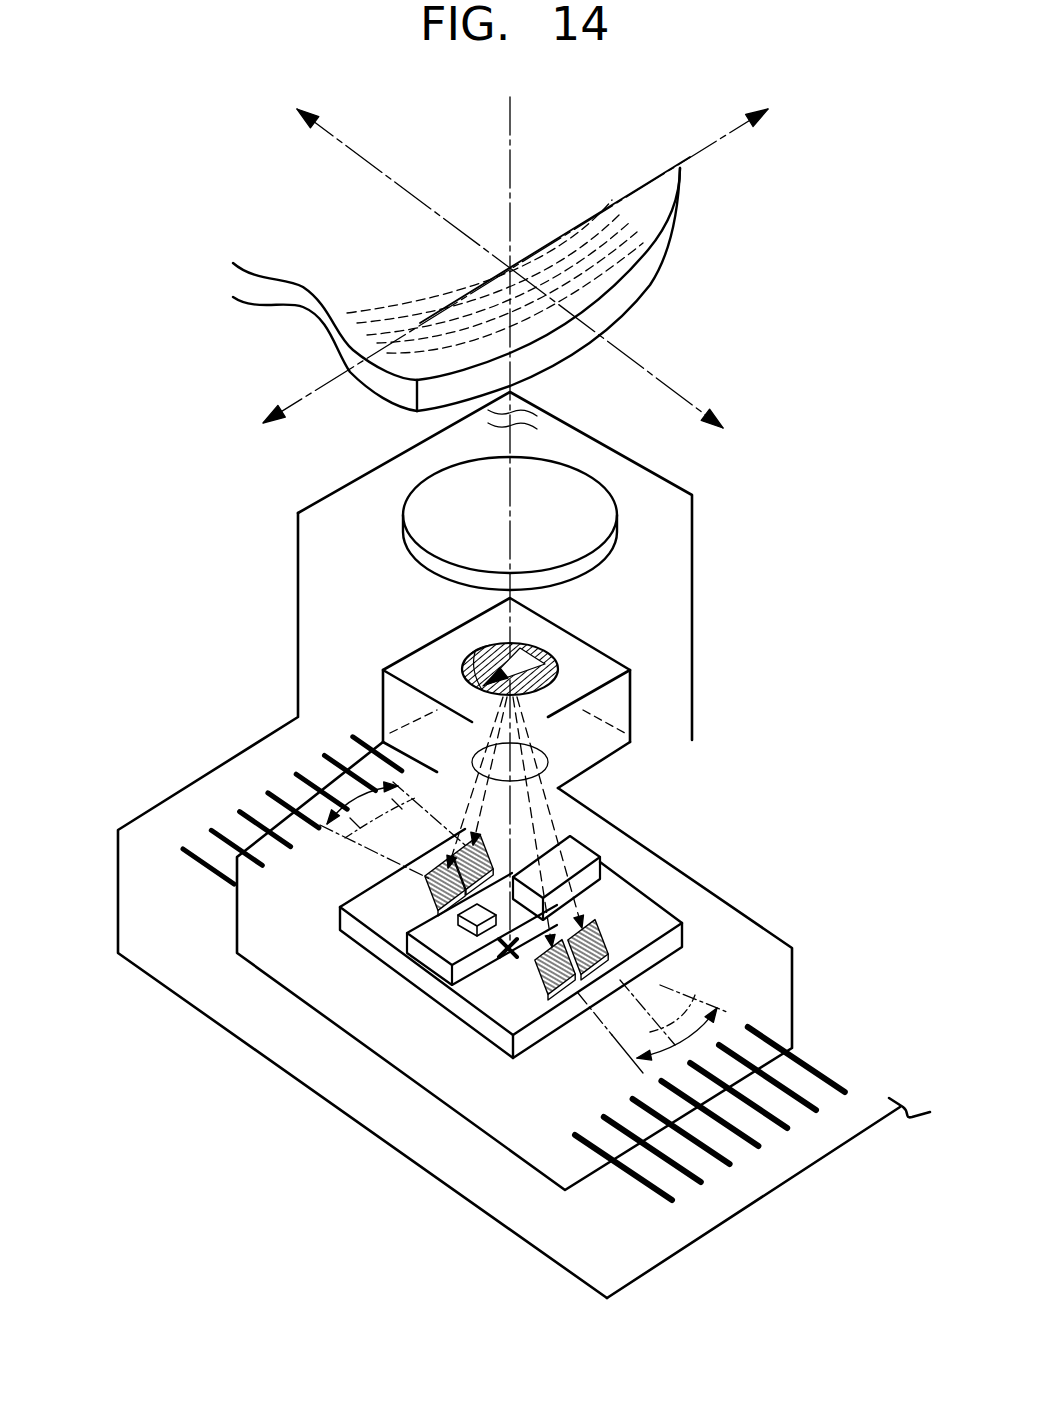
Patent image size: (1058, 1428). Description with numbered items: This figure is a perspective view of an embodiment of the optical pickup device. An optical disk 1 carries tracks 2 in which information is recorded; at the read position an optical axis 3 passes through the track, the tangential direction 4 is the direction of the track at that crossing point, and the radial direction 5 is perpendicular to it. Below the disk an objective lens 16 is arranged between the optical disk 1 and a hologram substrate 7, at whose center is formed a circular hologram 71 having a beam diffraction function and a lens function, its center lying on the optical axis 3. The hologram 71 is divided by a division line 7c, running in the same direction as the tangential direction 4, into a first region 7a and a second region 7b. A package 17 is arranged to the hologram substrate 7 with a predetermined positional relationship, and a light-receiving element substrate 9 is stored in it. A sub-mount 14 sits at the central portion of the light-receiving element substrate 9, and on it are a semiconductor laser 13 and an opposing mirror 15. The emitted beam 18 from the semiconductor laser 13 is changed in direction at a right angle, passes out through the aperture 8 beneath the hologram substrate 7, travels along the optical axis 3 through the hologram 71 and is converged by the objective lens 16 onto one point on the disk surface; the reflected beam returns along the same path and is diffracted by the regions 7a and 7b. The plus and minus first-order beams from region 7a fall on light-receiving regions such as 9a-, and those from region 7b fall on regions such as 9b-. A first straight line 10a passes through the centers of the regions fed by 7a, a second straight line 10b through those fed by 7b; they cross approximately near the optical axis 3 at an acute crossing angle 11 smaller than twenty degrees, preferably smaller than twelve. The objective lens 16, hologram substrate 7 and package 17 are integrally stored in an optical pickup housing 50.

The optical disk 1 is at (657, 249).
The tracks 2 is at (596, 188).
The optical axis 3 is at (506, 168).
The tangential direction 4 is at (713, 149).
The radial direction 5 is at (666, 383).
The hologram substrate 7 is at (623, 700).
The first region 7a is at (560, 670).
The second region 7b is at (468, 660).
The division line 7c is at (532, 647).
The hologram 71 is at (555, 653).
The beam aperture 8 is at (550, 753).
The light-receiving element substrate 9 is at (673, 943).
The light-receiving region 9a- is at (520, 840).
The light-receiving region 9b- is at (452, 850).
The first straight line 10a is at (612, 1035).
The second straight line 10b is at (678, 992).
The crossing angle 11 is at (681, 997).
The semiconductor laser 13 is at (450, 927).
The sub-mount 14 is at (443, 947).
The mirror 15 is at (600, 858).
The objective lens 16 is at (617, 507).
The package 17 is at (485, 1110).
The emitted beam 18 is at (510, 807).
The optical pickup housing 50 is at (145, 892).